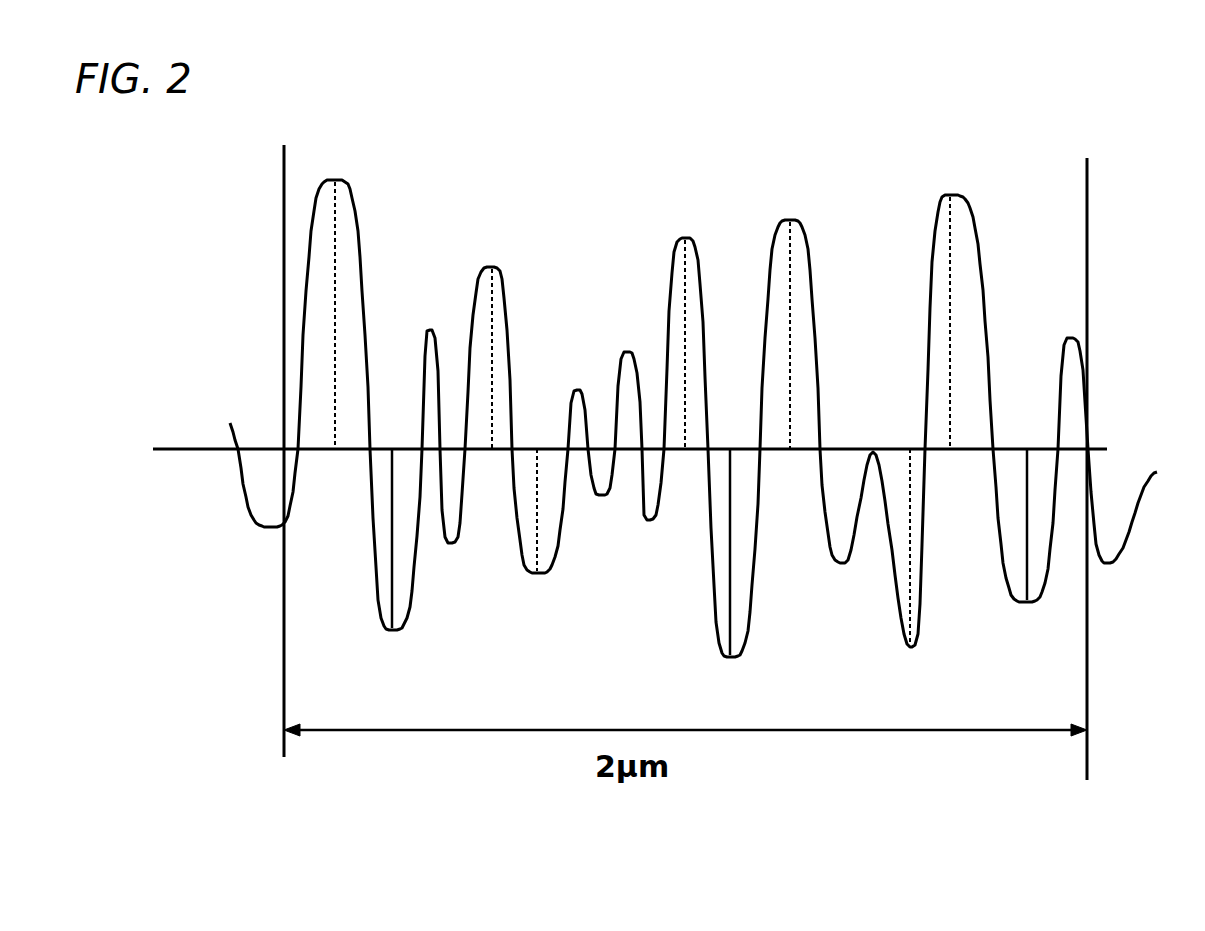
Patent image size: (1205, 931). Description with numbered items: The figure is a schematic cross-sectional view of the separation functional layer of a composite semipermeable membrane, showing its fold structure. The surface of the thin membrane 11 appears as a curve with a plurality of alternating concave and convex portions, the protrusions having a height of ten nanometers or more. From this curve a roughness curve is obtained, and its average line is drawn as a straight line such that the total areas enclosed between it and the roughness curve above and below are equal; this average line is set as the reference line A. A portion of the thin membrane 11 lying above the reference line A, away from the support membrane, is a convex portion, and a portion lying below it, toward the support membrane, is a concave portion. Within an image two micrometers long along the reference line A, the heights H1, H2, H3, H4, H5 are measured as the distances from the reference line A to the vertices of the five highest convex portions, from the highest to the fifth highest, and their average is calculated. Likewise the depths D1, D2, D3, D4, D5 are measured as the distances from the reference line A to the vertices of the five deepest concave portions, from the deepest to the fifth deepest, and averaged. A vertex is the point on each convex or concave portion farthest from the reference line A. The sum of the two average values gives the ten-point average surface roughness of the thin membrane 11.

The thin membrane 11 is at (1024, 158).
The reference line A is at (656, 433).
The height of convex portion H1 is at (338, 289).
The height of convex portion H2 is at (950, 298).
The height of convex portion H3 is at (788, 311).
The height of convex portion H4 is at (692, 320).
The height of convex portion H5 is at (497, 333).
The depth of concave portion D1 is at (732, 572).
The depth of concave portion D2 is at (910, 571).
The depth of concave portion D3 is at (383, 562).
The depth of concave portion D4 is at (1025, 550).
The depth of concave portion D5 is at (517, 533).